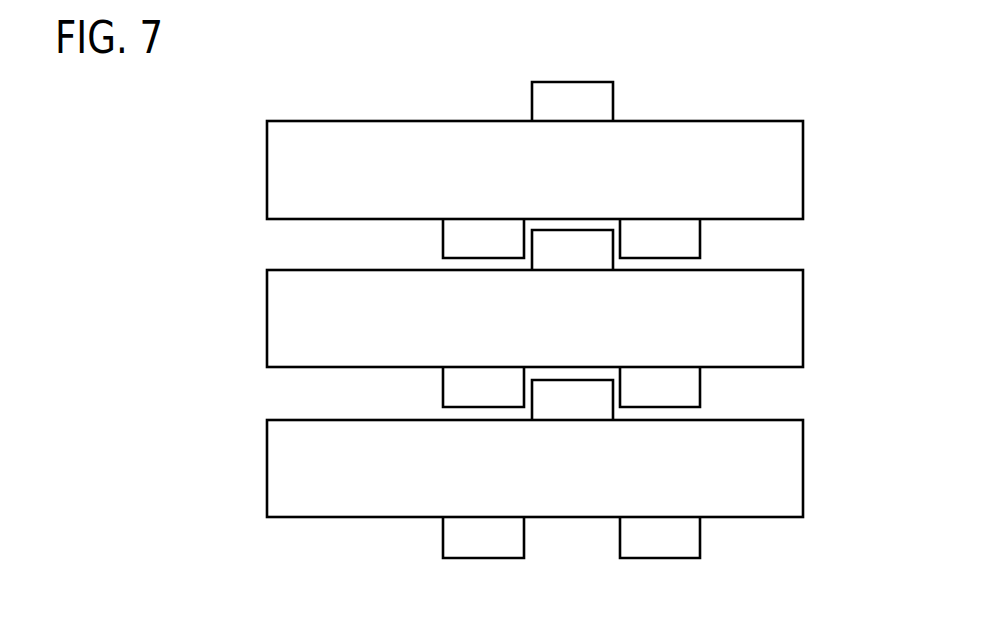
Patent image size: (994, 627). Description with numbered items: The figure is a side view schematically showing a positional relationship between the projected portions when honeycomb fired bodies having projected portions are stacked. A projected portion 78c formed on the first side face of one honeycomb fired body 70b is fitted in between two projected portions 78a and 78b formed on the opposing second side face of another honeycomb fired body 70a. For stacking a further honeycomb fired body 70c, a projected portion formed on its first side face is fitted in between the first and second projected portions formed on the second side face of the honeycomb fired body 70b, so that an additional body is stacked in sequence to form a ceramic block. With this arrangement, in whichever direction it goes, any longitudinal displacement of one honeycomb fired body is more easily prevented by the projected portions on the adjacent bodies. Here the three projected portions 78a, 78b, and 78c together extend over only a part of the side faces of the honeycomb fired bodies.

The honeycomb fired body 70a is at (787, 168).
The honeycomb fired body 70b is at (787, 319).
The honeycomb fired body 70c is at (785, 468).
The projected portion 78a is at (458, 245).
The projected portion 78b is at (685, 245).
The projected portion 78c is at (569, 250).